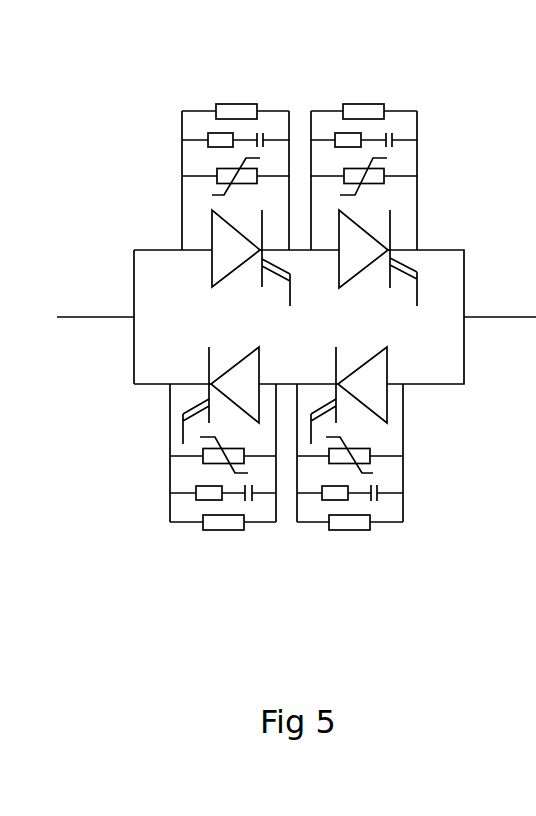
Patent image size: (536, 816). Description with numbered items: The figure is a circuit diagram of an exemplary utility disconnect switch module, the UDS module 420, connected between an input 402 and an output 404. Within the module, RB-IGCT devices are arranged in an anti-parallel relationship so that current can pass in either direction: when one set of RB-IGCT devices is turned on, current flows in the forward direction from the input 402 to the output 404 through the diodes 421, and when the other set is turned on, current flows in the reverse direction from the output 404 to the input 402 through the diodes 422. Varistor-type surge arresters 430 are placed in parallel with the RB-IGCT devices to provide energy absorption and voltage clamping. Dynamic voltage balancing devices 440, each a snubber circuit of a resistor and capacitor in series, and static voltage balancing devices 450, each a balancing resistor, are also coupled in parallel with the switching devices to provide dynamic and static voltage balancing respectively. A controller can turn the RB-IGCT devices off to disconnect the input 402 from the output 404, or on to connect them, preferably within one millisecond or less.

The input 402 is at (92, 315).
The output 404 is at (500, 315).
The UDS module 420 is at (462, 88).
The diode 421 is at (220, 288).
The diode 422 is at (258, 347).
The varistor-type surge arrester 430 is at (240, 183).
The dynamic voltage balancing device 440 is at (220, 153).
The static voltage balancing device 450 is at (238, 103).